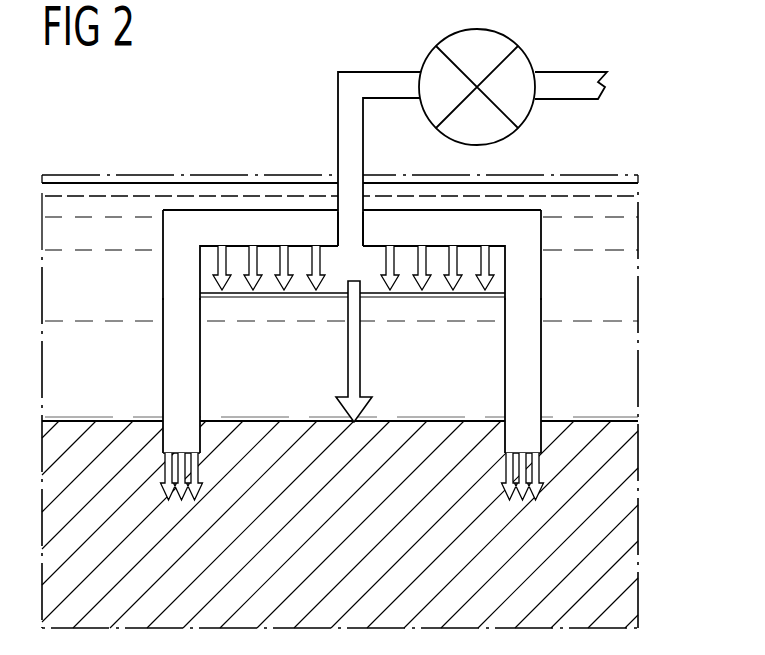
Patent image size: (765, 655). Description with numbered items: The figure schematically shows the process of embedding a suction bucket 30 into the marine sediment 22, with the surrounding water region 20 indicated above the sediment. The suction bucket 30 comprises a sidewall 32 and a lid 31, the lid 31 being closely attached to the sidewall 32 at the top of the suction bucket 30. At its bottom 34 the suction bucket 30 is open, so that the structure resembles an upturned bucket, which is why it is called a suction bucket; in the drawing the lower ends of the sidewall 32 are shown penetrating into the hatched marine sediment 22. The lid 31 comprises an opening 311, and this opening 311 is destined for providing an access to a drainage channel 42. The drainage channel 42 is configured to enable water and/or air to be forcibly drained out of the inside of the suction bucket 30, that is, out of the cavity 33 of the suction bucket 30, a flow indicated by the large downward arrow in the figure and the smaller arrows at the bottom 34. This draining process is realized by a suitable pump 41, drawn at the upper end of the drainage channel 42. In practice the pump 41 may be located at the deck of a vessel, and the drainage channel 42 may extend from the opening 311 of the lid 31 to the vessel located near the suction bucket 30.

The substrate / component to be treated 20 is at (628, 283).
The marine sediment 22 is at (630, 526).
The suction bucket 30 is at (250, 174).
The lid 31 is at (188, 218).
The opening 311 is at (352, 226).
The sidewall 32 is at (173, 365).
The cavity 33 is at (475, 412).
The bottom 34 is at (165, 470).
The pump 41 is at (519, 64).
The drainage channel 42 is at (350, 107).